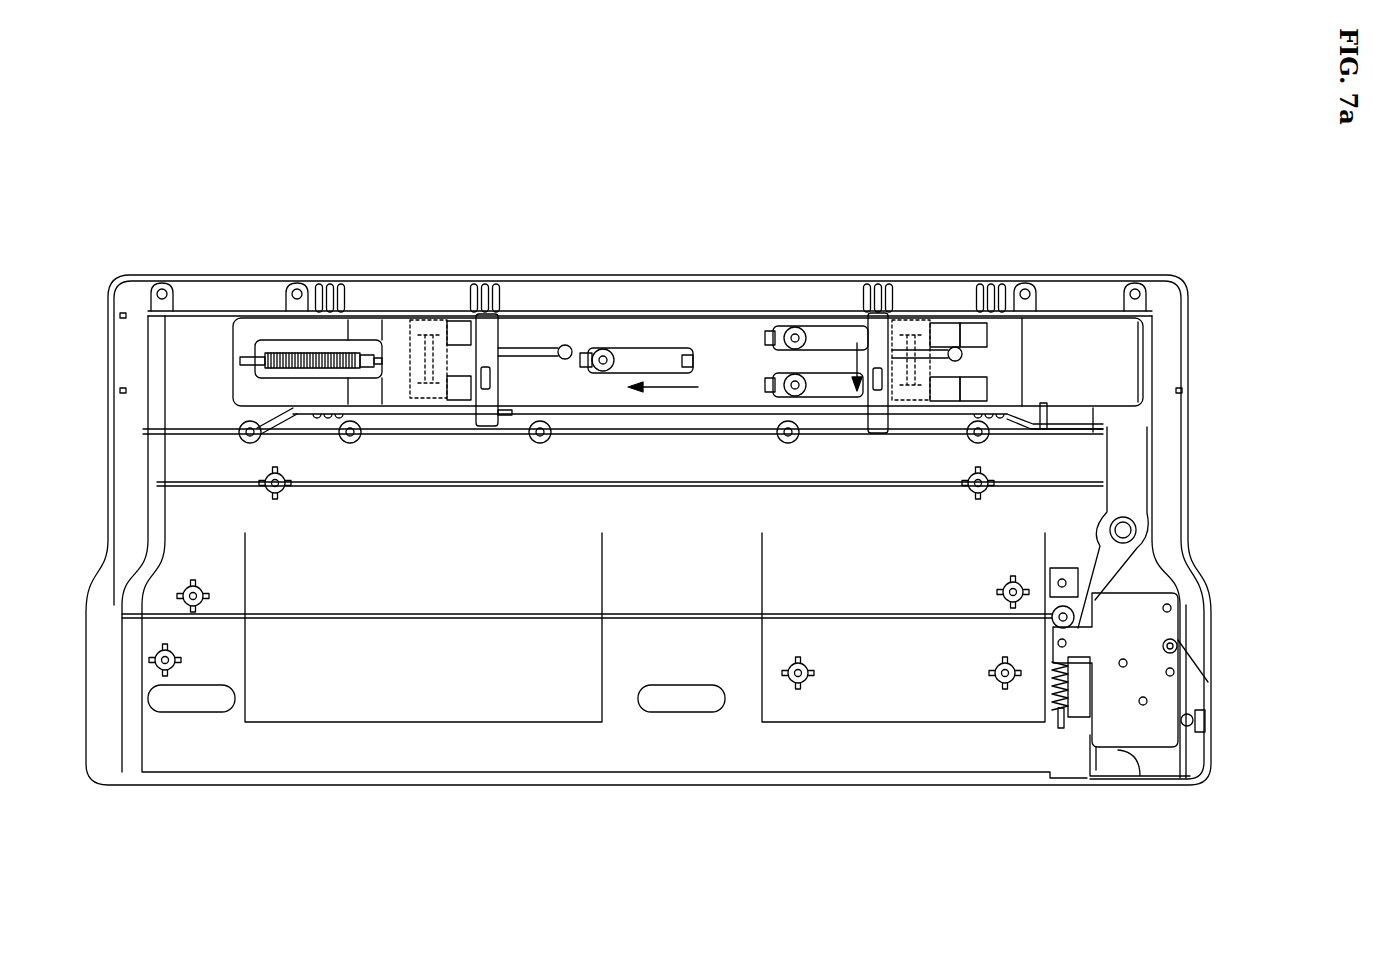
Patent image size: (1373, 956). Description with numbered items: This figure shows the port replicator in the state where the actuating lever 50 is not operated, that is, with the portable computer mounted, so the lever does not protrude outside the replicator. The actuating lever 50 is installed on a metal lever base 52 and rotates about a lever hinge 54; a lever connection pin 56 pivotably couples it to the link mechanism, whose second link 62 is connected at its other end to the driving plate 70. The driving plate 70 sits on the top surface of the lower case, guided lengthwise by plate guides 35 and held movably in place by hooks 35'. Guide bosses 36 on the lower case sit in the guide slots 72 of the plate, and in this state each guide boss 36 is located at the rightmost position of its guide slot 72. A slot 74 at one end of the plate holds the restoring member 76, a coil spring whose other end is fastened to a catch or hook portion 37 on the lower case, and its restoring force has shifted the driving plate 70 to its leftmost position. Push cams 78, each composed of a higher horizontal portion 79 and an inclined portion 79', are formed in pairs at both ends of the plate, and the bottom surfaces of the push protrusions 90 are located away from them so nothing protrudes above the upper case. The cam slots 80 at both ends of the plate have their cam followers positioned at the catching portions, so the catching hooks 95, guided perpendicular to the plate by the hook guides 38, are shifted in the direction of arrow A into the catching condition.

The plate guide 35 is at (599, 331).
The hook 35' is at (571, 602).
The guide boss 36 is at (604, 348).
The catch or hook portion 37 is at (373, 352).
The hook guide 38 is at (490, 366).
The actuating lever 50 is at (1193, 679).
The lever base 52 is at (1118, 745).
The lever hinge 54 is at (1175, 645).
The lever connection pin 56 is at (1193, 718).
The second link 62 is at (1128, 463).
The driving plate 70 is at (1127, 356).
The guide slot 72 is at (657, 348).
The slot 74 is at (398, 356).
The restoring member 76 is at (298, 350).
The push cam 78 is at (939, 269).
The horizontal portion 79 is at (958, 289).
The inclined portion 79' is at (927, 269).
The cam slot 80 is at (902, 322).
The push protrusion 90 is at (437, 322).
The catching hook 95 is at (482, 315).